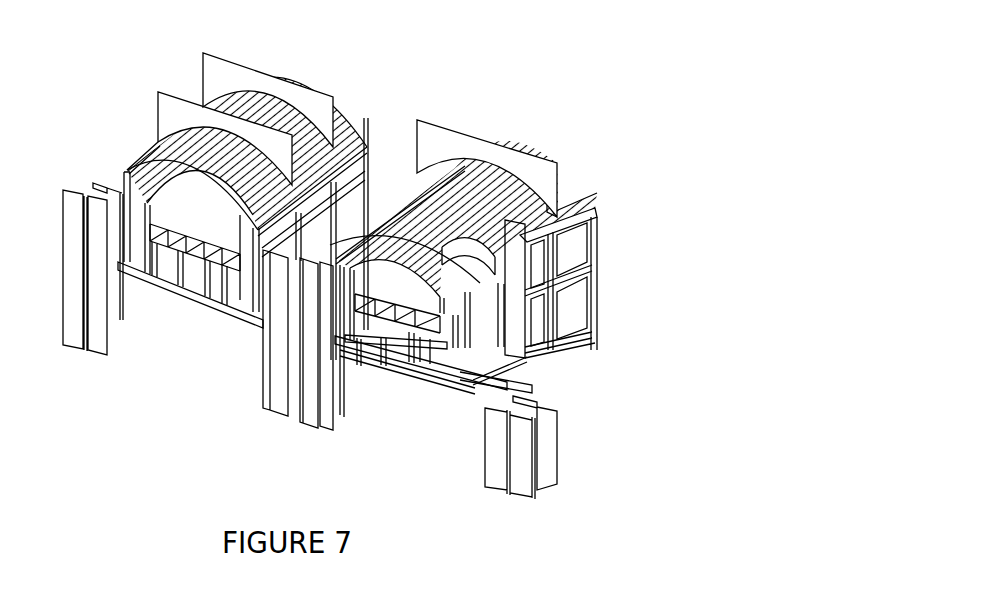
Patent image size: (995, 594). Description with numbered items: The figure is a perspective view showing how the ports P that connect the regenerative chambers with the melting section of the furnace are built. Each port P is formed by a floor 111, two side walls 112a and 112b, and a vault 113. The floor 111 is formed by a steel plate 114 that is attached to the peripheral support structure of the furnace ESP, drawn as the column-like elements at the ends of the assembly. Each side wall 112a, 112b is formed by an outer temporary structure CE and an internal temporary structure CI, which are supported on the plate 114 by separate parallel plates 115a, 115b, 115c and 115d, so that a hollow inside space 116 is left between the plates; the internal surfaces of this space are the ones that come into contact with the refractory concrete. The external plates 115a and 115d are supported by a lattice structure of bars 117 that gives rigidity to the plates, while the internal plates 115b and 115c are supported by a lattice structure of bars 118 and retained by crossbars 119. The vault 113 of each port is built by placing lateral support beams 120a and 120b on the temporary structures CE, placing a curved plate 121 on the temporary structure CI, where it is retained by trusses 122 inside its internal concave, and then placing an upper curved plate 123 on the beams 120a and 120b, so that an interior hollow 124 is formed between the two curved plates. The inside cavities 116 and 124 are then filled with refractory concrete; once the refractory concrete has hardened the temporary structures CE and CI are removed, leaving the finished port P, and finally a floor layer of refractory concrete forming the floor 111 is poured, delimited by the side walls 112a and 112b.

The floor 111 is at (203, 279).
The side wall 112a is at (138, 240).
The side wall 112b is at (252, 279).
The vault 113 is at (167, 180).
The steel plate 114 is at (512, 383).
The external plate 115a is at (330, 318).
The internal plate 115b is at (331, 308).
The internal plate 115c is at (490, 350).
The external plate 115d is at (524, 308).
The hollow inside space 116 is at (340, 278).
The lattice structure of bars 117 is at (553, 267).
The lattice structure of bars 118 is at (366, 336).
The crossbars 119 is at (410, 336).
The lateral support beam 120a is at (143, 158).
The lateral support beam 120b is at (355, 137).
The curved plate 121 is at (428, 254).
The trusses 122 is at (402, 295).
The upper curved plate 123 is at (500, 213).
The interior hollow 124 is at (488, 208).
The port P is at (500, 134).
The outer temporary structure CE is at (599, 265).
The internal temporary structure CI is at (517, 320).
The peripheral support structure of the furnace ESP is at (493, 455).